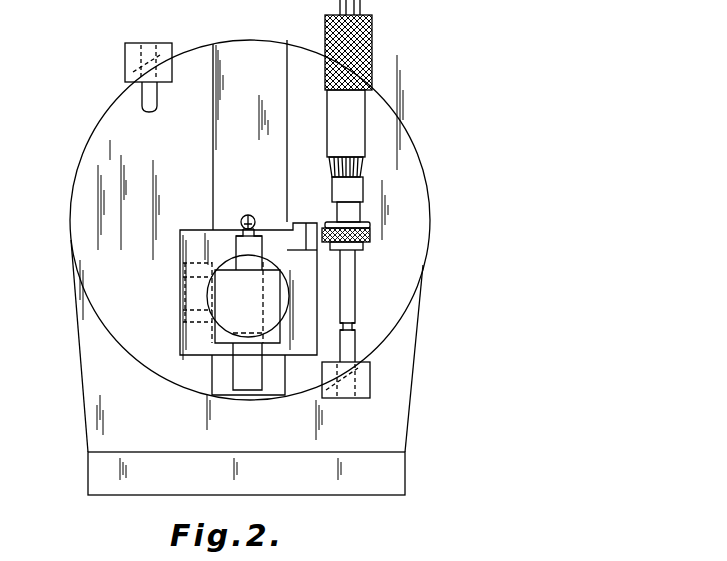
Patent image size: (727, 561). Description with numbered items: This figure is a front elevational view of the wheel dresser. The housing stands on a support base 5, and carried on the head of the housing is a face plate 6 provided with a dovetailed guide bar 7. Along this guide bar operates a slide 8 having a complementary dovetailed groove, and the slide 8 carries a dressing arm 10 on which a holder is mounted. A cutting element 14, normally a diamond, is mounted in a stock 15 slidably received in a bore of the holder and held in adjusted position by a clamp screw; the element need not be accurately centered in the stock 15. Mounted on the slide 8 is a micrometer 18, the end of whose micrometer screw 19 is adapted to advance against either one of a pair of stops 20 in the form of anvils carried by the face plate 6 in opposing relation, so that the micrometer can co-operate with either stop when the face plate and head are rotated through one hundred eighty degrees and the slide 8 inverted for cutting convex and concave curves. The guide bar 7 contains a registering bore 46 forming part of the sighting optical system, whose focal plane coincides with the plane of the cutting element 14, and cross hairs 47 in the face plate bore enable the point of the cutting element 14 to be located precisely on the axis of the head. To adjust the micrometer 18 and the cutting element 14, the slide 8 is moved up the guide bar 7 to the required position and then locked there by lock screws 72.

The support base 5 is at (471, 395).
The face plate 6 is at (402, 176).
The dovetailed guide bar 7 is at (235, 53).
The slide 8 is at (192, 330).
The dressing arm 10 is at (292, 298).
The cutting element 14 is at (238, 222).
The stock 15 is at (249, 386).
The micrometer 18 is at (350, 126).
The micrometer screw 19 is at (356, 311).
The stops 20 is at (143, 97).
The registering bore 46 is at (256, 218).
The cross hairs 47 is at (240, 211).
The lock screws 72 is at (186, 270).